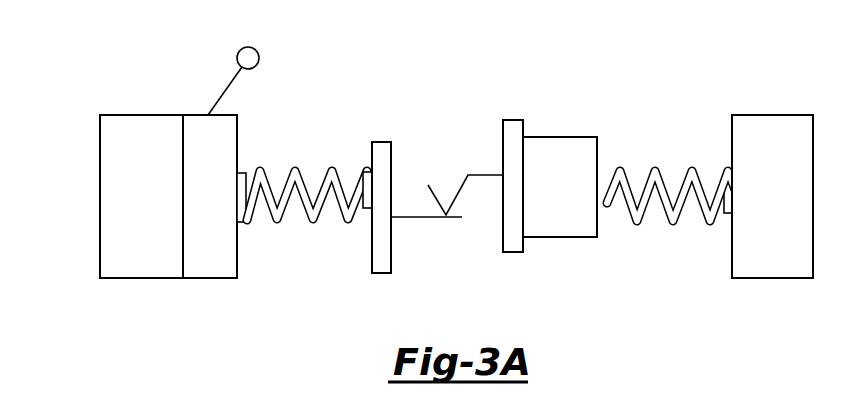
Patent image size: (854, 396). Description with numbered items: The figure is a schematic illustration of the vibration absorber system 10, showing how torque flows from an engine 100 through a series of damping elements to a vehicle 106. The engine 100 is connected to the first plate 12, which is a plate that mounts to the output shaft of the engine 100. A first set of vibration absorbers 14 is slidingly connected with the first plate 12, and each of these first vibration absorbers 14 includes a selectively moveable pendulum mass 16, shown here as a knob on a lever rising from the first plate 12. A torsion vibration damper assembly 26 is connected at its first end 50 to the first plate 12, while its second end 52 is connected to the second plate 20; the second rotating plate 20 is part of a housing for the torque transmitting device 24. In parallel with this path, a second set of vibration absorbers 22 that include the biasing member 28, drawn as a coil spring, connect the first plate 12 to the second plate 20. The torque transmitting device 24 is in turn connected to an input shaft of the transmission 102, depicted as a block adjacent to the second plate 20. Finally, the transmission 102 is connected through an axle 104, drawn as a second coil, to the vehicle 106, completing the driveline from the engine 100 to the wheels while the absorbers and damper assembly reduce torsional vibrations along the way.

The vibration absorber system 10 is at (474, 145).
The first plate 12 is at (213, 278).
The first set of vibration absorbers 14 is at (221, 94).
The pendulum mass 16 is at (259, 62).
The second plate 20 is at (391, 247).
The second set of vibration absorbers 22 is at (321, 151).
The torque transmitting device 24 is at (461, 130).
The torsion vibration damper assembly 26 is at (320, 179).
The biasing member 28 is at (327, 208).
The first end 50 is at (246, 154).
The second end 52 is at (393, 135).
The engine 100 is at (136, 221).
The transmission 102 is at (560, 137).
The axle 104 is at (680, 173).
The vehicle 106 is at (775, 115).